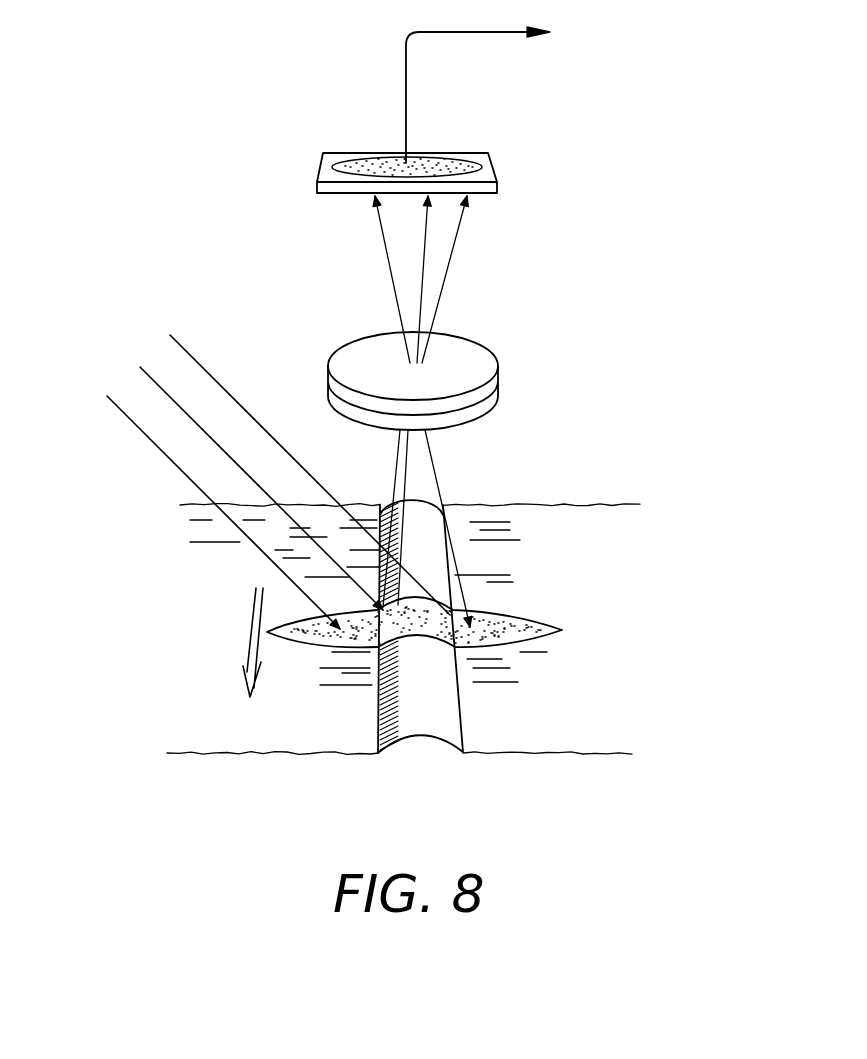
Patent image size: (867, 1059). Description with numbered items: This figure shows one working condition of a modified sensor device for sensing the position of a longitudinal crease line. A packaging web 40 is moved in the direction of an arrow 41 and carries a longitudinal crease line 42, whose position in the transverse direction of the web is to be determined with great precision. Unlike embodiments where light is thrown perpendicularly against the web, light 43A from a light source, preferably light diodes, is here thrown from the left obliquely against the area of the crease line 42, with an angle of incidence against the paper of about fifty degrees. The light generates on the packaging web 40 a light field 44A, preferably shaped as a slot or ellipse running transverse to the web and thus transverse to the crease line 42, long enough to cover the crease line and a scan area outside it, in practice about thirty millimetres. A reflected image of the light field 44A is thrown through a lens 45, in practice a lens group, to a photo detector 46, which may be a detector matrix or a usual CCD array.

The packaging web 40 is at (530, 737).
The arrow 41 is at (250, 625).
The longitudinal crease line 42 is at (417, 737).
The light 43A is at (183, 477).
The light field 44A is at (527, 620).
The lens 45 is at (478, 356).
The photo detector 46 is at (492, 171).